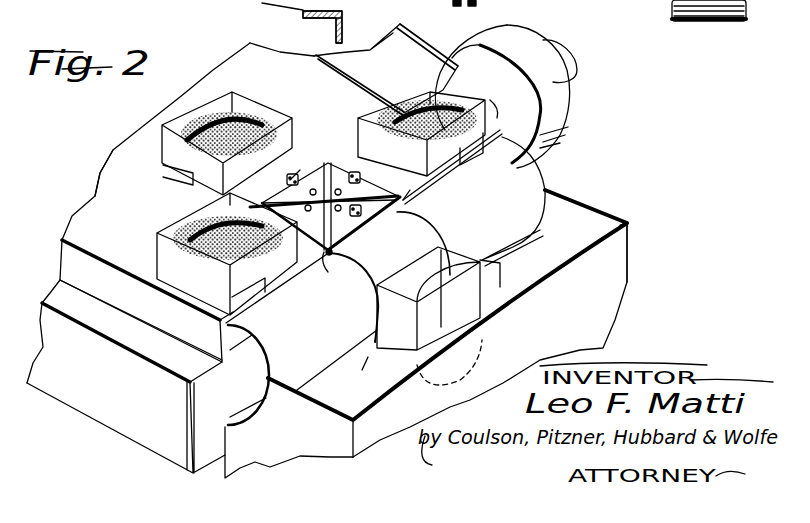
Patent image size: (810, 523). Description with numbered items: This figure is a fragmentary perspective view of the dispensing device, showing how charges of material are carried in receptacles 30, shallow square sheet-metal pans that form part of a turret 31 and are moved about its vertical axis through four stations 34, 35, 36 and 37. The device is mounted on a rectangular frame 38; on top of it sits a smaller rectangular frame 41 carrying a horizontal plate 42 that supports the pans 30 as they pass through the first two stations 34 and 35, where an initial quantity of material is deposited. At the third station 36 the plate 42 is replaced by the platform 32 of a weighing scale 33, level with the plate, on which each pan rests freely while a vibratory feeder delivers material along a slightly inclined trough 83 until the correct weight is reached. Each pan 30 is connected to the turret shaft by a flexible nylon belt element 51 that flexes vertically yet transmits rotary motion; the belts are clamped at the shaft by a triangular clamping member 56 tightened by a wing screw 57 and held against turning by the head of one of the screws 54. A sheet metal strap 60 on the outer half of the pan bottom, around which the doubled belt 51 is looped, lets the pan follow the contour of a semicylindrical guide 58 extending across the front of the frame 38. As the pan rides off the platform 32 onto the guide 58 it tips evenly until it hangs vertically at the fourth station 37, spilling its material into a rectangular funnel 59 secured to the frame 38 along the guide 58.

The receptacle 30 is at (183, 104).
The turret 31 is at (323, 147).
The platform 32 is at (495, 133).
The weighing scale 33 is at (563, 115).
The first station 34 is at (150, 247).
The second station 35 is at (158, 113).
The third station 36 is at (478, 62).
The fourth station 37 is at (470, 240).
The rectangular frame 38 is at (102, 410).
The smaller rectangular frame 41 is at (72, 258).
The horizontal plate 42 is at (100, 173).
The element 51 is at (302, 170).
The screws 54 is at (288, 203).
The triangular clamping member 56 is at (372, 188).
The wing screw 57 is at (338, 172).
The semicylindrical guide 58 is at (545, 195).
The funnel 59 is at (610, 216).
The sheet metal strap 60 is at (177, 178).
The trough 83 is at (408, 55).